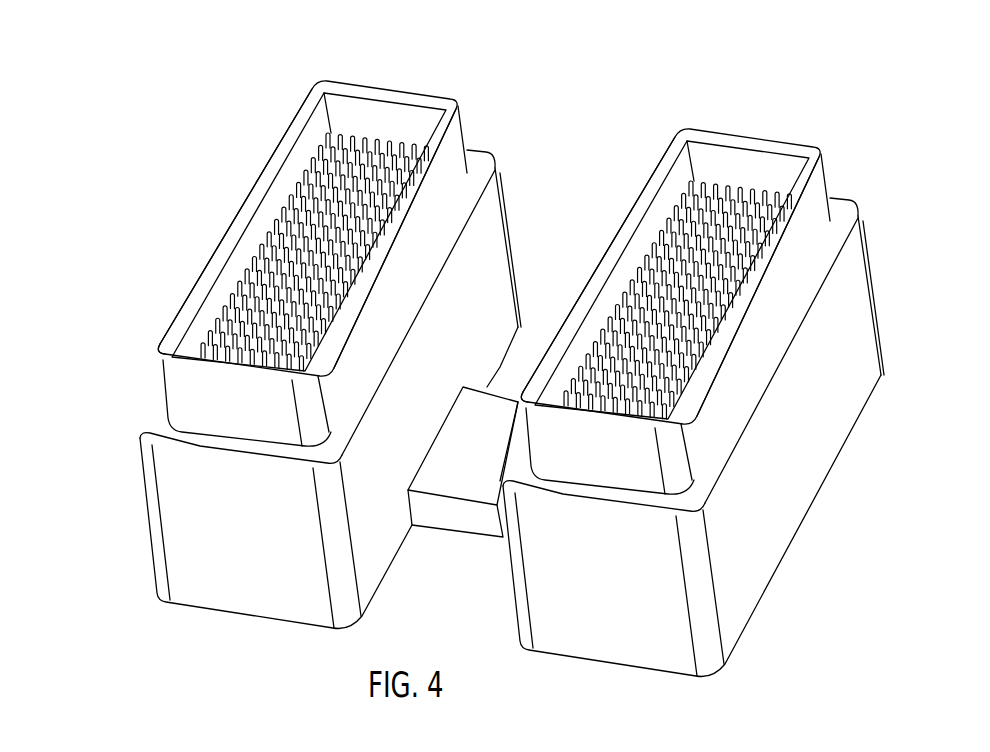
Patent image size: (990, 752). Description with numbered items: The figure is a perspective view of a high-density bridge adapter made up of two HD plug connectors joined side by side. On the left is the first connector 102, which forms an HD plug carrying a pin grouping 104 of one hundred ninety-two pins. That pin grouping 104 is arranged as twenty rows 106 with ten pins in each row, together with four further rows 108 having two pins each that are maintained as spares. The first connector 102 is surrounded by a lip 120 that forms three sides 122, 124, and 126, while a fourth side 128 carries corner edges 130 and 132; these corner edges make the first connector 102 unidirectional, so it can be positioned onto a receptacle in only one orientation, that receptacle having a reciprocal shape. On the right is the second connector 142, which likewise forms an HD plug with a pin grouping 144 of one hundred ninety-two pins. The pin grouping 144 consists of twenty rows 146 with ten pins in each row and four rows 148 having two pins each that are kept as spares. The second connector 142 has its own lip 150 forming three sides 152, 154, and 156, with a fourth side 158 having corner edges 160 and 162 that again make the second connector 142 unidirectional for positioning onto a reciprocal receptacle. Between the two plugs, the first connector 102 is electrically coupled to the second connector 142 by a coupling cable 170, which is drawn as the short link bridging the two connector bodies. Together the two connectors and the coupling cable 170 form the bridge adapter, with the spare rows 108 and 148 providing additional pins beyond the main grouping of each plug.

The first connector 102 is at (137, 532).
The pin grouping 104 is at (326, 268).
The rows 106 is at (423, 147).
The rows 108 is at (327, 132).
The lip 120 is at (343, 335).
The side 122 is at (469, 176).
The side 124 is at (333, 80).
The side 126 is at (243, 202).
The fourth side 128 is at (233, 403).
The corner edge 130 is at (150, 368).
The corner edge 132 is at (297, 398).
The second connector 142 is at (887, 339).
The pin grouping 144 is at (706, 321).
The rows 146 is at (748, 189).
The rows 148 is at (781, 197).
The lip 150 is at (767, 250).
The side 152 is at (763, 307).
The side 154 is at (735, 137).
The side 156 is at (614, 235).
The fourth side 158 is at (611, 455).
The corner edge 160 is at (518, 404).
The corner edge 162 is at (665, 437).
The coupling cable 170 is at (461, 522).